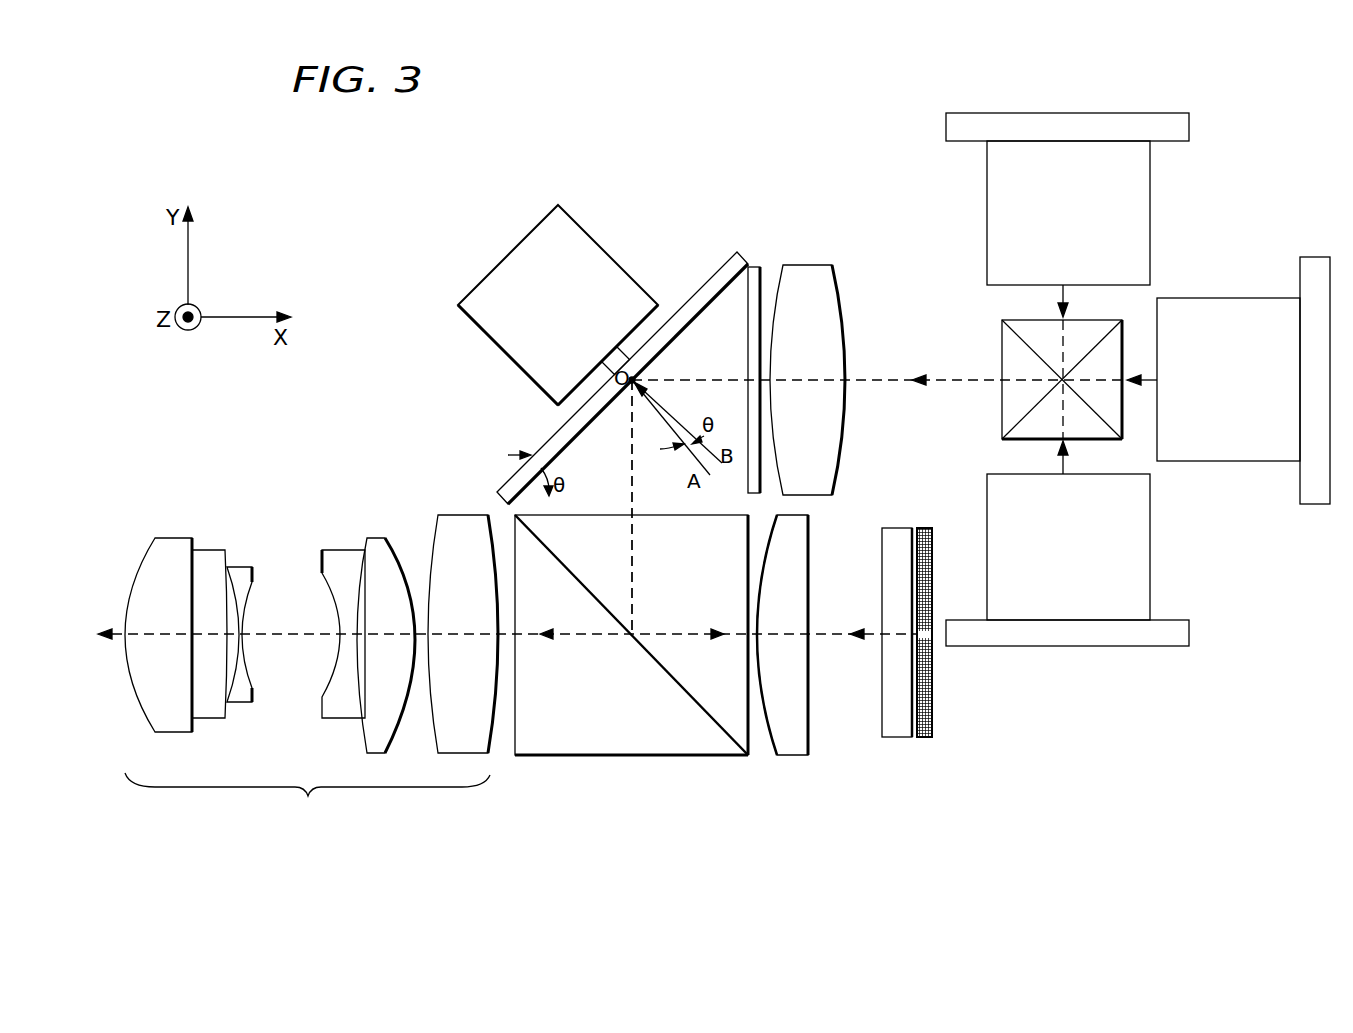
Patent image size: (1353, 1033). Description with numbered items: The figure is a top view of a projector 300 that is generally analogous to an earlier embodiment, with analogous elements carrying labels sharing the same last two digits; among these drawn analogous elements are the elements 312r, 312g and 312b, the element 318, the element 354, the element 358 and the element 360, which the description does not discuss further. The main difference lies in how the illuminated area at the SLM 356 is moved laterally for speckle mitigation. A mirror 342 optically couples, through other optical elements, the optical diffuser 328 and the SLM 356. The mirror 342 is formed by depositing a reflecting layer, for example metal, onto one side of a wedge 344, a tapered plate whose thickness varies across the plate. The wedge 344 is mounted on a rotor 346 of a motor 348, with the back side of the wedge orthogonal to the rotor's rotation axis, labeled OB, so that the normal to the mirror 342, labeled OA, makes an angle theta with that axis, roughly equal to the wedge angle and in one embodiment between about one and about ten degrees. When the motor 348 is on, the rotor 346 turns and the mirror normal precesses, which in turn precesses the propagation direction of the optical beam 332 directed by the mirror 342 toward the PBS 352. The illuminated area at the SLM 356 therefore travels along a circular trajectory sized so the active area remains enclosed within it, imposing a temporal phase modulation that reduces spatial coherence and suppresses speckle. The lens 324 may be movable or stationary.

The projector 300 is at (370, 142).
The red light source 312r is at (1150, 190).
The green light source 312g is at (1150, 552).
The blue light source 312b is at (1229, 298).
The color combining X-cube 318 is at (1002, 418).
The lens 324 is at (810, 265).
The optical diffuser 328 is at (753, 266).
The optical beam 332 is at (631, 478).
The mirror 342 is at (688, 347).
The wedge 344 is at (697, 295).
The rotor 346 is at (607, 365).
The motor 348 is at (495, 270).
The PBS 352 is at (630, 755).
The wave plate 354 is at (893, 740).
The SLM 356 is at (923, 738).
The field lens 358 is at (790, 758).
The projection lens group 360 is at (311, 674).